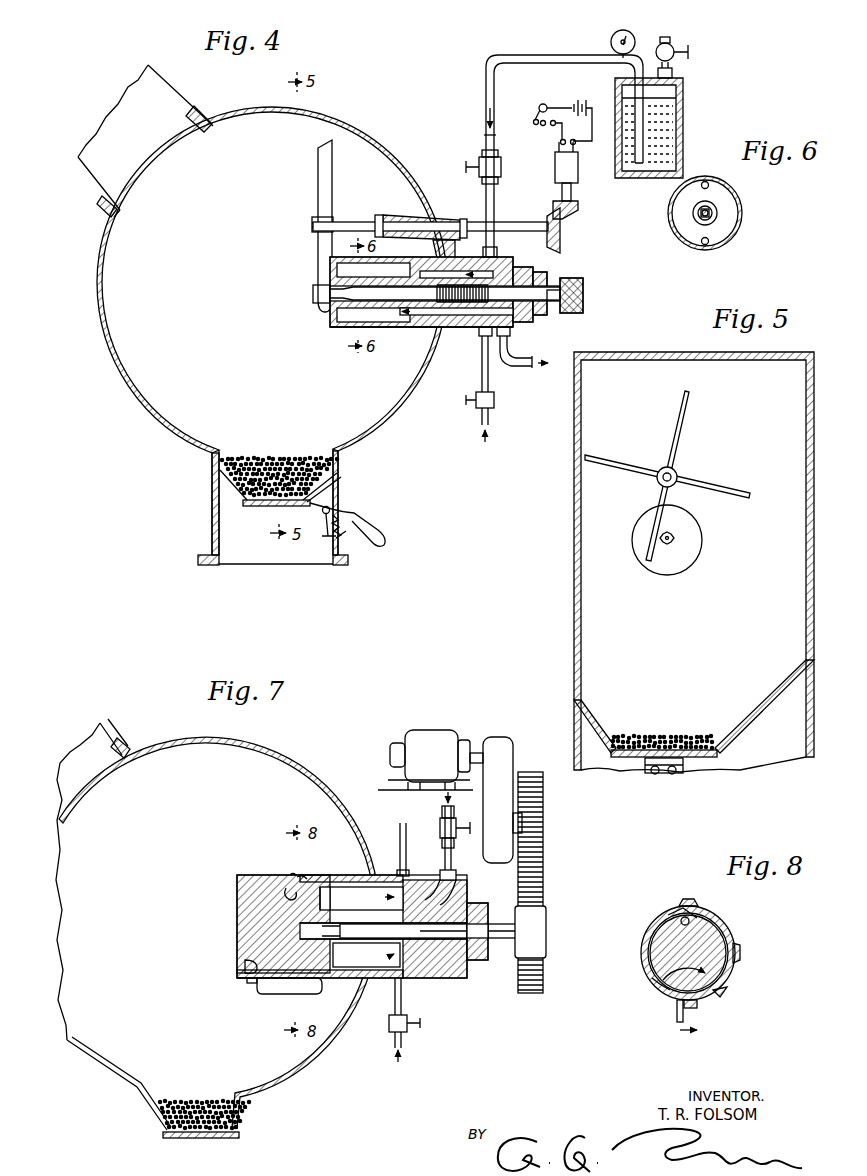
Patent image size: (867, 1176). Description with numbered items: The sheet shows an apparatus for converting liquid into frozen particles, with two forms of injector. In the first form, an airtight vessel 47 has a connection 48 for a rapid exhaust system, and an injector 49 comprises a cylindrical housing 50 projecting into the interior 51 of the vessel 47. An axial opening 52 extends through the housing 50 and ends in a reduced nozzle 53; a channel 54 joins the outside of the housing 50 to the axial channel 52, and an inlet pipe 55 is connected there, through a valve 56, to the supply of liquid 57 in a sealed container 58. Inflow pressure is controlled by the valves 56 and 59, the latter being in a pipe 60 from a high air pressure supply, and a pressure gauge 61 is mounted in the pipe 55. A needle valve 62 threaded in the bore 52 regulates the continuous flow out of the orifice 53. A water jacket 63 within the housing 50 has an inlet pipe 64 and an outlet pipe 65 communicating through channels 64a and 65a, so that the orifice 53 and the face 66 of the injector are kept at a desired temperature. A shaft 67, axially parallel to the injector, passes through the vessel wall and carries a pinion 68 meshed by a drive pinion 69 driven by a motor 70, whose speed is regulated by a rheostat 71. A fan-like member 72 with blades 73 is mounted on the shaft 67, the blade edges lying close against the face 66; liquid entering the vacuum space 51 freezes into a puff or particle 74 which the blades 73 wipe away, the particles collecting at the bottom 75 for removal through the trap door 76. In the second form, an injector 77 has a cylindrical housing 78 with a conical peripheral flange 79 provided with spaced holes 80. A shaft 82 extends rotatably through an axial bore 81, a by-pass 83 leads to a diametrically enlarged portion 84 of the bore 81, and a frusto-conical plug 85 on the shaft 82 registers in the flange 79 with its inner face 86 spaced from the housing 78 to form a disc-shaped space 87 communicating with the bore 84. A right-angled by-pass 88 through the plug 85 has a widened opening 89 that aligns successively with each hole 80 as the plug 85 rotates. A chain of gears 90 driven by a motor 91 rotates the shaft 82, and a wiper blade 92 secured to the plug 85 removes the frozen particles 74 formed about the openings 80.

In FIG. 4, the airtight vessel 47 is at (398, 157).
In FIG. 5, the airtight vessel 47 is at (573, 675).
In FIG. 7, the airtight vessel 47 is at (313, 777).
In FIG. 4, the connection for rapid exhaust system 48 is at (196, 97).
In FIG. 7, the connection for rapid exhaust system 48 is at (117, 732).
In FIG. 4, the injector 49 is at (500, 246).
In FIG. 5, the injector 49 is at (655, 578).
In FIG. 4, the cylindrical housing 50 is at (442, 329).
In FIG. 6, the cylindrical housing 50 is at (673, 222).
In FIG. 4, the interior of the vessel 51 is at (162, 408).
In FIG. 7, the interior of the vessel 51 is at (276, 772).
In FIG. 4, the axial opening 52 is at (363, 302).
In FIG. 6, the axial opening 52 is at (698, 228).
In FIG. 4, the reduced nozzle 53 is at (329, 294).
In FIG. 5, the reduced nozzle 53 is at (674, 538).
In FIG. 4, the channel 54 is at (444, 258).
In FIG. 4, the inlet pipe 55 is at (556, 63).
In FIG. 4, the valve 56 is at (474, 163).
In FIG. 4, the liquid 57 is at (677, 128).
In FIG. 4, the sealed container 58 is at (683, 107).
In FIG. 4, the valve 59 is at (680, 46).
In FIG. 4, the pipe 60 is at (675, 72).
In FIG. 4, the pressure gauge 61 is at (611, 47).
In FIG. 4, the needle valve 62 is at (556, 288).
In FIG. 6, the needle valve 62 is at (717, 210).
In FIG. 4, the water jacket 63 is at (382, 268).
In FIG. 6, the water jacket 63 is at (727, 200).
In FIG. 7, the water jacket 63 is at (355, 983).
In FIG. 4, the inlet pipe 64 is at (482, 371).
In FIG. 7, the inlet pipe 64 is at (393, 1040).
In FIG. 4, the channel 64a is at (437, 325).
In FIG. 6, the channel 64a is at (705, 253).
In FIG. 4, the outlet pipe 65 is at (526, 366).
In FIG. 7, the outlet pipe 65 is at (402, 830).
In FIG. 4, the channel 65a is at (445, 268).
In FIG. 6, the channel 65a is at (707, 182).
In FIG. 4, the face of the injector 66 is at (326, 324).
In FIG. 5, the face of the injector 66 is at (693, 563).
In FIG. 4, the shaft 67 is at (352, 222).
In FIG. 5, the shaft 67 is at (678, 473).
In FIG. 4, the pinion 68 is at (563, 235).
In FIG. 4, the drive pinion 69 is at (580, 211).
In FIG. 4, the motor 70 is at (556, 176).
In FIG. 4, the rheostat 71 is at (540, 123).
In FIG. 4, the fan-like member 72 is at (314, 200).
In FIG. 4, the blades 73 is at (317, 168).
In FIG. 5, the blades 73 is at (672, 440).
In FIG. 4, the frozen particle 74 is at (301, 455).
In FIG. 5, the frozen particle 74 is at (656, 735).
In FIG. 7, the frozen particle 74 is at (198, 1100).
In FIG. 8, the frozen particle 74 is at (688, 899).
In FIG. 4, the bottom of the vessel 75 is at (234, 499).
In FIG. 7, the bottom of the vessel 75 is at (156, 1119).
In FIG. 4, the trap door 76 is at (267, 509).
In FIG. 5, the trap door 76 is at (703, 763).
In FIG. 7, the trap door 76 is at (213, 1139).
In FIG. 7, the injector 77 is at (450, 985).
In FIG. 7, the cylindrical housing 78 is at (333, 974).
In FIG. 7, the conical peripheral flange 79 is at (318, 877).
In FIG. 8, the conical peripheral flange 79 is at (711, 920).
In FIG. 7, the holes 80 is at (297, 880).
In FIG. 8, the holes 80 is at (651, 984).
In FIG. 7, the axial bore 81 is at (423, 920).
In FIG. 7, the shaft 82 is at (498, 907).
In FIG. 7, the by-pass 83 is at (442, 877).
In FIG. 7, the enlarged portion of the bore 84 is at (347, 928).
In FIG. 7, the frusto-conical plug 85 is at (237, 920).
In FIG. 8, the frusto-conical plug 85 is at (737, 933).
In FIG. 7, the inner face of the plug 86 is at (322, 945).
In FIG. 7, the disc-shaped space 87 is at (340, 880).
In FIG. 7, the right-angled by-pass 88 is at (290, 893).
In FIG. 8, the right-angled by-pass 88 is at (694, 910).
In FIG. 8, the widened opening 89 is at (679, 912).
In FIG. 7, the chain of gears 90 is at (546, 883).
In FIG. 7, the motor 91 is at (427, 737).
In FIG. 7, the wiper blade 92 is at (257, 989).
In FIG. 8, the wiper blade 92 is at (677, 1018).